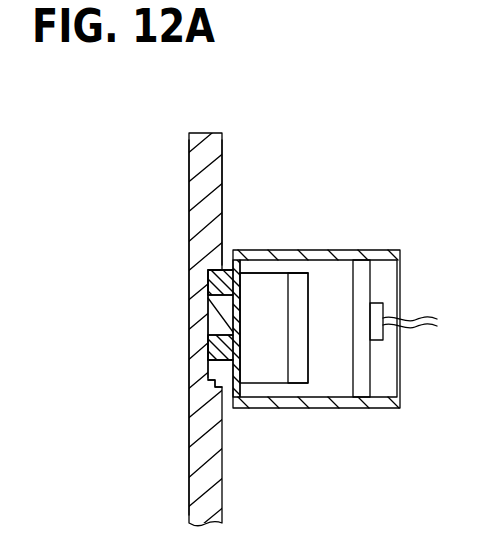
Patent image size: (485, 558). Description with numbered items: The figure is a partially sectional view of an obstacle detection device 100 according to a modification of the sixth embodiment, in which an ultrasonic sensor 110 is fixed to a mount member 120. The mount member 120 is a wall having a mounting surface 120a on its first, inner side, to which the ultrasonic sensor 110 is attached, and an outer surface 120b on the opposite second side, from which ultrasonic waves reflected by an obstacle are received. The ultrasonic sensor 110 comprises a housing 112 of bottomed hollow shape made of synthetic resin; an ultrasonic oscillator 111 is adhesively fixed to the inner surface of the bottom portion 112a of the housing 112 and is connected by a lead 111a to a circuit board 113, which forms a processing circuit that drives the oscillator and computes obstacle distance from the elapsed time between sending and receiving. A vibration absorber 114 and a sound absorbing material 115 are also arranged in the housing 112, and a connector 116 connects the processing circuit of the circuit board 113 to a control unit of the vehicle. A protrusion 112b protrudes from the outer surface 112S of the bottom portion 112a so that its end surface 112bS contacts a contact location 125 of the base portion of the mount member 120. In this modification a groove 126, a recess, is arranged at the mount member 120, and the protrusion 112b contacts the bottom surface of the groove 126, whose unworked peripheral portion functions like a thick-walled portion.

The obstacle detection device 100 is at (340, 190).
The ultrasonic sensor 110 is at (398, 420).
The ultrasonic oscillator 111 is at (257, 378).
The lead 111a is at (332, 268).
The housing 112 is at (291, 258).
The outer surface 112S is at (220, 264).
The bottom portion 112a is at (220, 278).
The protrusion 112b is at (218, 340).
The end surface 112bS is at (214, 354).
The circuit board 113 is at (362, 276).
The vibration absorber 114 is at (330, 374).
The sound absorbing material 115 is at (300, 374).
The connector 116 is at (383, 339).
The mount member 120 is at (177, 166).
The mounting surface 120a is at (224, 184).
The outer surface 120b is at (189, 208).
The contact location 125 is at (207, 312).
The groove 126 is at (212, 383).